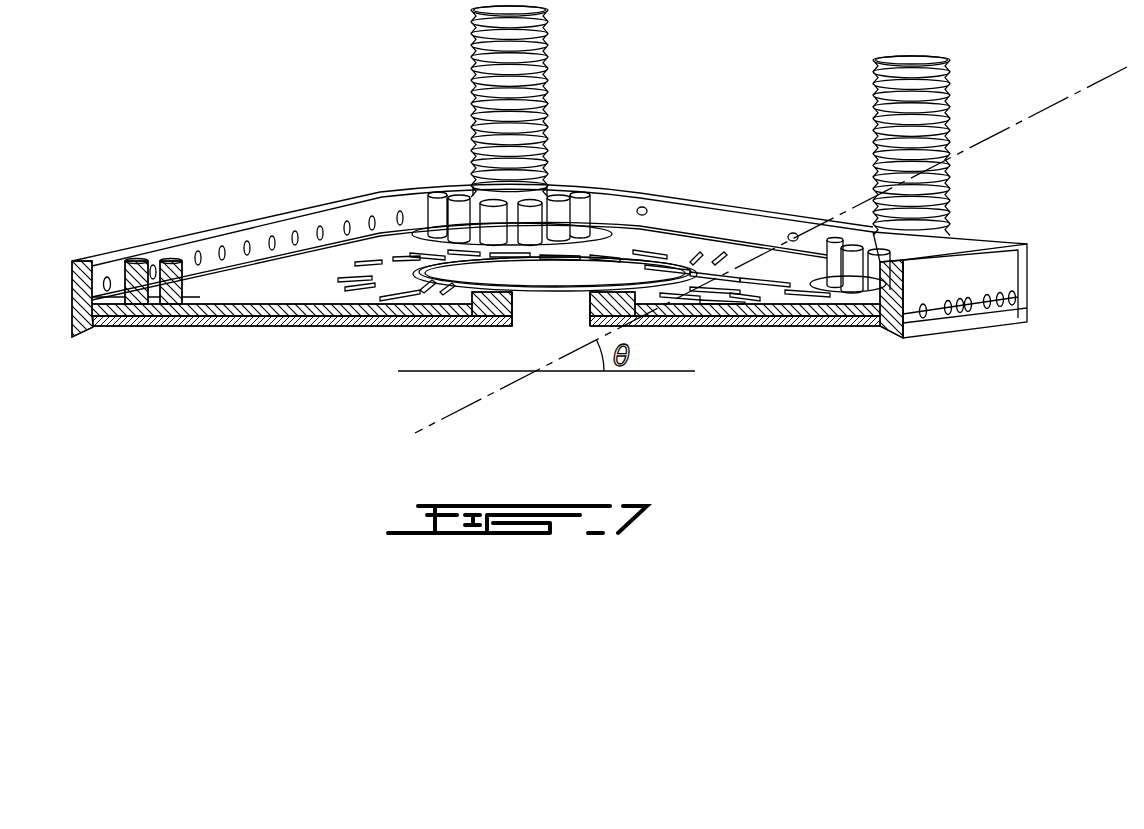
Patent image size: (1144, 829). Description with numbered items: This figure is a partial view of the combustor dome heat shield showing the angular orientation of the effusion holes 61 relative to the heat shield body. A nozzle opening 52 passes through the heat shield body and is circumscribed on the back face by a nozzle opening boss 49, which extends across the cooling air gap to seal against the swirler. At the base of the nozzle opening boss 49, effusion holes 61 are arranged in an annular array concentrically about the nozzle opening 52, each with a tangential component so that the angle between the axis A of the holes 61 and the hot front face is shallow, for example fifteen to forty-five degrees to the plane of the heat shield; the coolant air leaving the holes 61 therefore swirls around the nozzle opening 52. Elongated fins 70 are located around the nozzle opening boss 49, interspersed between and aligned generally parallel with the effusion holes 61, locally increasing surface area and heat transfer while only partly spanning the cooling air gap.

The nozzle opening boss 49 is at (650, 262).
The nozzle opening 52 is at (545, 300).
The effusion holes 61 is at (672, 300).
The fins 70 is at (340, 273).
The axis of the holes A is at (1030, 108).